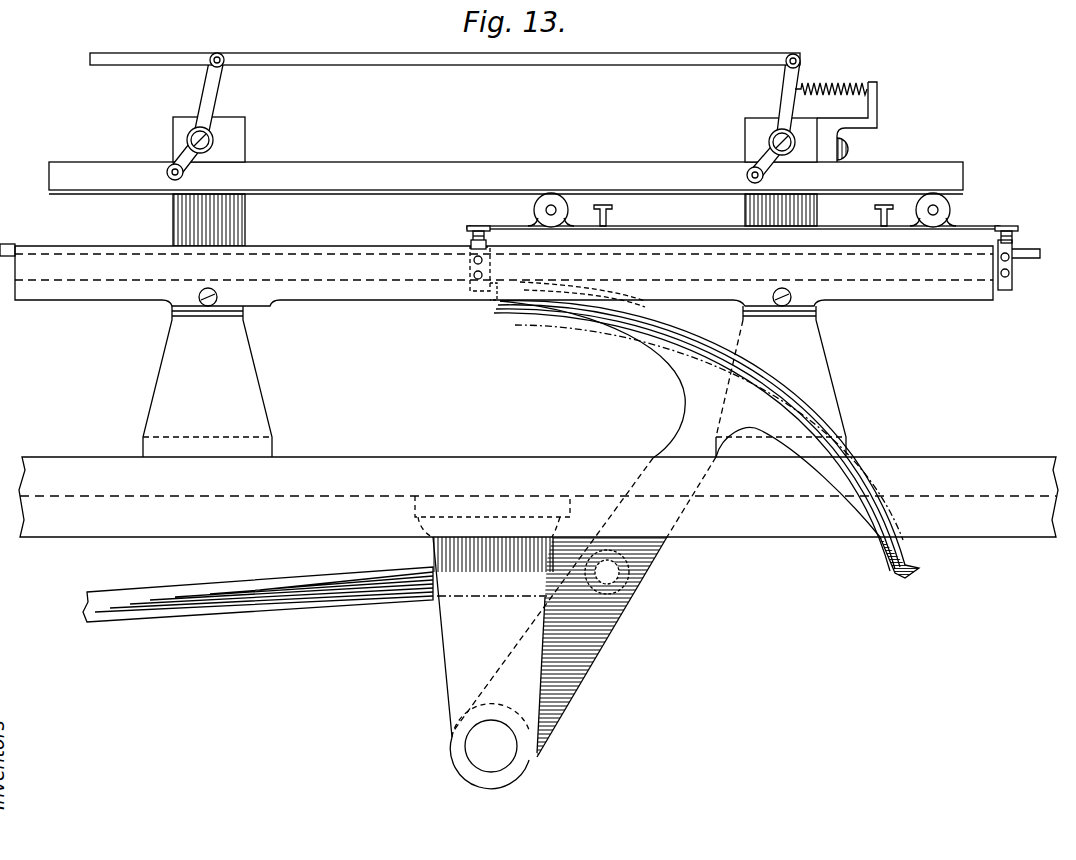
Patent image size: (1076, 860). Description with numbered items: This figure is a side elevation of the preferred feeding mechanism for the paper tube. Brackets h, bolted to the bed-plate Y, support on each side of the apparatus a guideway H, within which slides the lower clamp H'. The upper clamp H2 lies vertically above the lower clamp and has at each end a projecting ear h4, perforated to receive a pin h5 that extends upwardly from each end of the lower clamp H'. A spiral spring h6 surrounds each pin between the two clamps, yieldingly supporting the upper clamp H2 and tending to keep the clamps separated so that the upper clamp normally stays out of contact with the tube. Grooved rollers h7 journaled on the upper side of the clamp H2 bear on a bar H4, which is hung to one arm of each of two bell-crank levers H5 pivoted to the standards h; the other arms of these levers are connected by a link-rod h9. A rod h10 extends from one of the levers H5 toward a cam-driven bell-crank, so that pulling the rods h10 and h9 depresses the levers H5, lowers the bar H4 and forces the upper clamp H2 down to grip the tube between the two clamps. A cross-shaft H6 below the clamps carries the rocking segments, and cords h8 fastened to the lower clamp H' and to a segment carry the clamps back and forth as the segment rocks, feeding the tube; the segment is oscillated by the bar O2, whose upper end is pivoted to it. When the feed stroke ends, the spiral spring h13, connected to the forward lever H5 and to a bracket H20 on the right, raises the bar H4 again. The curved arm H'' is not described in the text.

The rod h10 is at (123, 58).
The link-rod h9 is at (499, 60).
The bell-crank levers H5 is at (212, 96).
The spiral spring h13 is at (831, 78).
The bracket H20 is at (884, 106).
The bar H4 is at (497, 172).
The grooved rollers h7 is at (555, 192).
The pin h5 is at (481, 228).
The projecting ear h4 is at (467, 228).
The spiral spring h6 is at (472, 236).
The upper clamp H2 is at (712, 238).
The guideway H is at (496, 283).
The lower clamp H' is at (755, 288).
The cords h8 is at (855, 456).
The brackets h is at (496, 325).
The curved arm H'' is at (586, 529).
The bed-plate Y is at (538, 497).
The bar O2 is at (258, 602).
The cross-shaft H6 is at (500, 750).